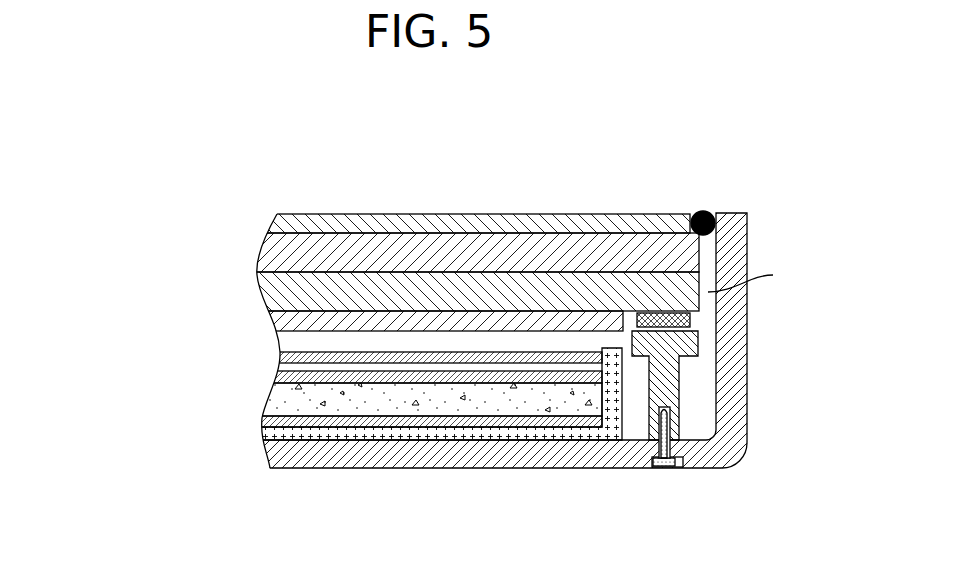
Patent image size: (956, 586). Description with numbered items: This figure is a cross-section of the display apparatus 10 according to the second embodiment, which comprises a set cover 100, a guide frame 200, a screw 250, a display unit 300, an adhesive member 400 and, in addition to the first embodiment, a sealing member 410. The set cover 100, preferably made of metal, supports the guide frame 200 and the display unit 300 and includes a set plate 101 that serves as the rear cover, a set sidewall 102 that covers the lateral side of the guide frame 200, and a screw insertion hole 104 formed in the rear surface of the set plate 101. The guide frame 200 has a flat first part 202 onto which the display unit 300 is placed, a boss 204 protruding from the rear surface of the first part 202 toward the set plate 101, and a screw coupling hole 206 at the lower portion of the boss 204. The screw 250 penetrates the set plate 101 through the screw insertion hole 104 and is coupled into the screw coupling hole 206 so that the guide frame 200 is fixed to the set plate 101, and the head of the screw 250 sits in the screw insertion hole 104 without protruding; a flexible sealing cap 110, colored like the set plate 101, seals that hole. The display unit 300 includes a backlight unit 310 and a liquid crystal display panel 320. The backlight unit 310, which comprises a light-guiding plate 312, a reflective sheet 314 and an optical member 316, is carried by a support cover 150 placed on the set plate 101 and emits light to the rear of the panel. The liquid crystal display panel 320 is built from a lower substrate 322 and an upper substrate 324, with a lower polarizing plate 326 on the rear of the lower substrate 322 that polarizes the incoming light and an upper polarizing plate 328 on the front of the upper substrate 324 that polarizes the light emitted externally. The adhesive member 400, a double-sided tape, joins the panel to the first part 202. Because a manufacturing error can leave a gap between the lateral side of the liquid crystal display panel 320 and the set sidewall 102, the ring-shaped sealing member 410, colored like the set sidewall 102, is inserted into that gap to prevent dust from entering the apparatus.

The display apparatus 10 is at (453, 192).
The set cover 100 is at (757, 462).
The set plate 101 is at (272, 465).
The set sidewall 102 is at (732, 252).
The screw insertion hole 104 is at (681, 462).
The sealing cap 110 is at (655, 467).
The support cover 150 is at (270, 433).
The guide frame 200 is at (805, 355).
The first part 202 is at (690, 345).
The boss 204 is at (672, 372).
The screw coupling hole 206 is at (667, 410).
The screw 250 is at (668, 432).
The display unit 300 is at (93, 260).
The backlight unit 310 is at (140, 362).
The light-guiding plate 312 is at (266, 399).
The reflective sheet 314 is at (262, 421).
The optical member 316 is at (280, 373).
The liquid crystal display panel 320 is at (160, 215).
The lower substrate 322 is at (262, 294).
The upper substrate 324 is at (262, 255).
The lower polarizing plate 326 is at (272, 325).
The upper polarizing plate 328 is at (270, 223).
The adhesive member 400 is at (690, 320).
The sealing member 410 is at (705, 211).